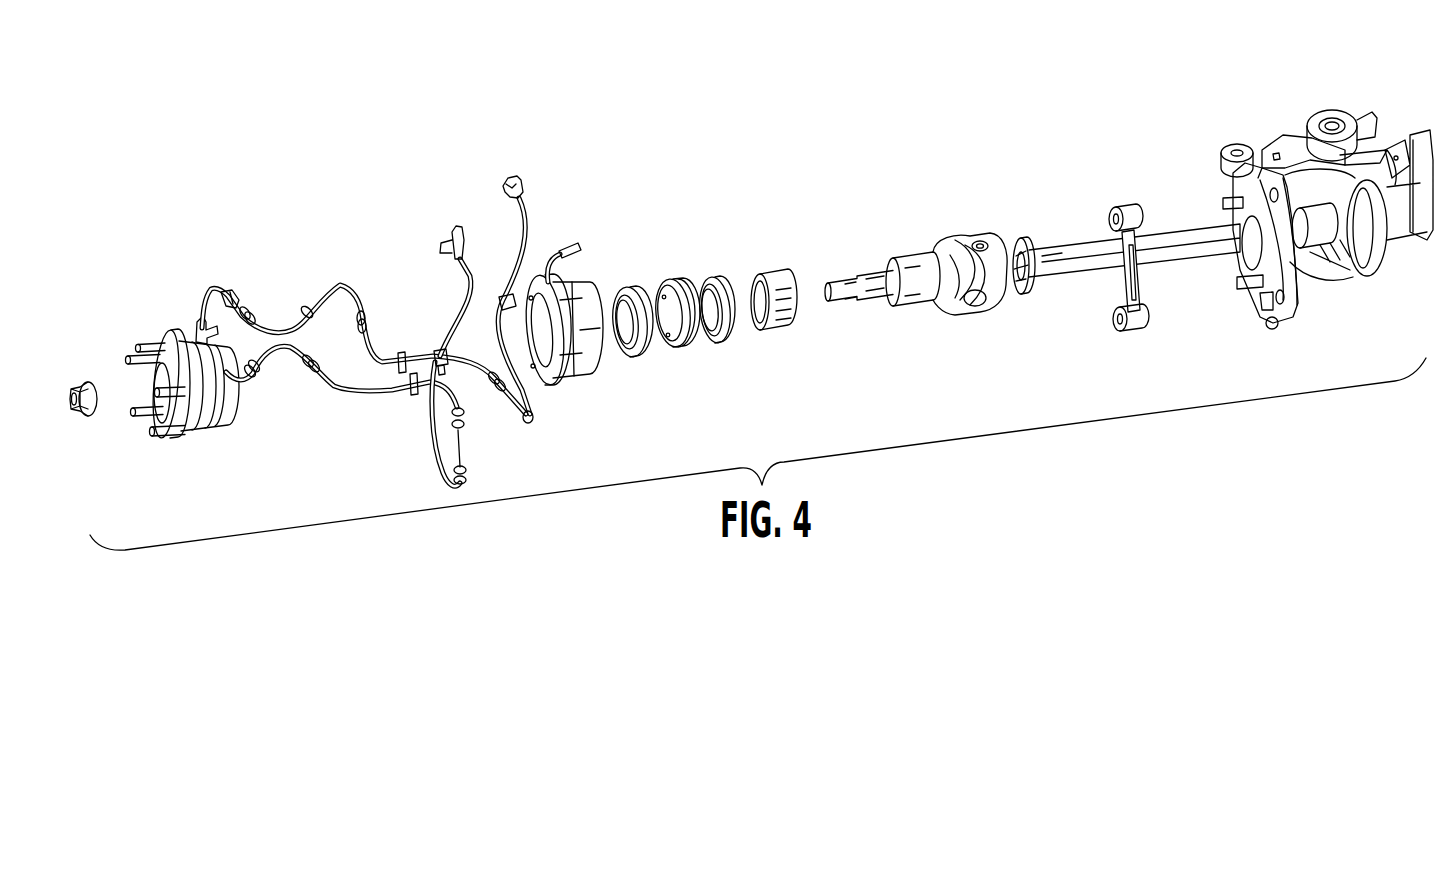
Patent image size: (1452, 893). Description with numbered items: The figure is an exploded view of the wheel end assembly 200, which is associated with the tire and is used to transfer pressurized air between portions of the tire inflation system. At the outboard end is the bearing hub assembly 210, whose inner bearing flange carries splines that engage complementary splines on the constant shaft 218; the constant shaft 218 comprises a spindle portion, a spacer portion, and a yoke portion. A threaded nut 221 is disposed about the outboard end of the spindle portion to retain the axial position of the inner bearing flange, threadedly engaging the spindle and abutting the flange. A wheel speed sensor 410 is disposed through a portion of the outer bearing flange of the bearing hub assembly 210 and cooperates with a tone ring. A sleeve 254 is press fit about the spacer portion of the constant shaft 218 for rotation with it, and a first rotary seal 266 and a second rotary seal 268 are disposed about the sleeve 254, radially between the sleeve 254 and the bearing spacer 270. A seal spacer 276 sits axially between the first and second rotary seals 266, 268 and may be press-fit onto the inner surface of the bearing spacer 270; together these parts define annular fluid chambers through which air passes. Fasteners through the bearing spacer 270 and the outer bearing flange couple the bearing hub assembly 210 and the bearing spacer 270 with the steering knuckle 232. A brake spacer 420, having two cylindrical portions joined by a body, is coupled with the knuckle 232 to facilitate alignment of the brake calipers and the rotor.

The wheel end assembly 200 is at (546, 125).
The bearing hub assembly 210 is at (192, 452).
The constant shaft 218 is at (870, 282).
The threaded nut 221 is at (88, 380).
The steering knuckle 232 is at (1278, 148).
The sleeve 254 is at (778, 290).
The first rotary seal 266 is at (628, 290).
The second rotary seal 268 is at (717, 281).
The bearing spacer 270 is at (572, 358).
The seal spacer 276 is at (672, 282).
The wheel speed sensor 410 is at (205, 333).
The brake spacer 420 is at (1122, 212).